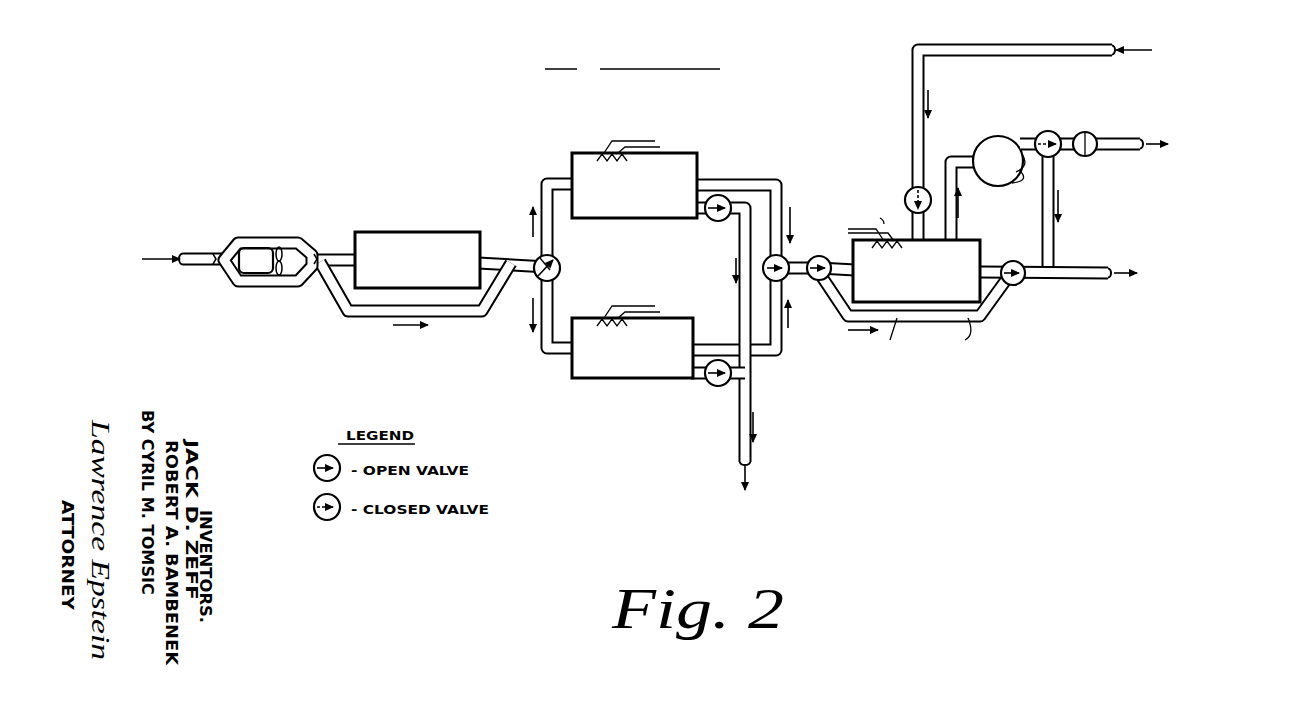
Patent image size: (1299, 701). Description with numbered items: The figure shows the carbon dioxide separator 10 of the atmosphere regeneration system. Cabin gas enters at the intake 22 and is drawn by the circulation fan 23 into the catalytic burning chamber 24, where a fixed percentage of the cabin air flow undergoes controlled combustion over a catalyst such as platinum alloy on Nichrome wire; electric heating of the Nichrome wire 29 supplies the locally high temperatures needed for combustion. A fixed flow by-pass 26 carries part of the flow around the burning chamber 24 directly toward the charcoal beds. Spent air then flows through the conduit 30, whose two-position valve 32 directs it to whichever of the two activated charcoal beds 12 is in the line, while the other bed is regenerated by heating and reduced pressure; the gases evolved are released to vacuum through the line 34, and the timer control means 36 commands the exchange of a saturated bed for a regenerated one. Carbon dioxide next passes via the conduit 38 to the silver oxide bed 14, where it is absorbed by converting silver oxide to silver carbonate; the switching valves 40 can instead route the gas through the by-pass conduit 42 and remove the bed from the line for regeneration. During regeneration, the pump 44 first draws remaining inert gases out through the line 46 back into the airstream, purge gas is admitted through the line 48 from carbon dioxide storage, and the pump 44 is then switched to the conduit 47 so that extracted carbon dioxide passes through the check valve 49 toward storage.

The carbon dioxide separator 10 is at (510, 97).
The activated charcoal bed 12 is at (702, 152).
The silver oxide bed 14 is at (982, 258).
The cabin gas intake 22 is at (175, 261).
The circulation fan 23 is at (275, 227).
The catalytic burning chamber 24 is at (405, 232).
The fixed flow by-pass 26 is at (343, 313).
The Nichrome wire 29 is at (613, 150).
The conduit 30 is at (549, 233).
The two-position valve 32 is at (562, 267).
The line 34 is at (751, 399).
The timer control means 36 is at (720, 221).
The conduit 38 is at (776, 185).
The switching valves 40 is at (808, 258).
The by-pass conduit 42 is at (895, 326).
The pump 44 is at (990, 152).
The line 46 is at (1053, 238).
The conduit 47 is at (1125, 139).
The purge gas line 48 is at (1026, 48).
The check valve 49 is at (1085, 130).